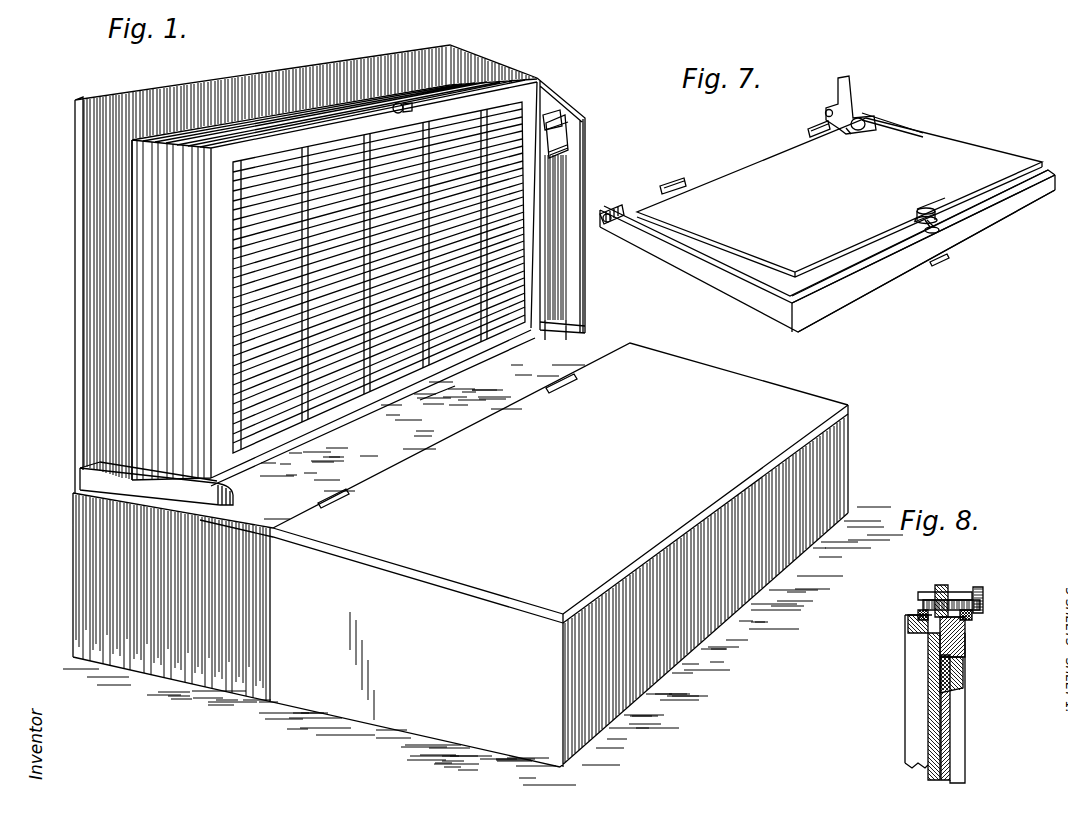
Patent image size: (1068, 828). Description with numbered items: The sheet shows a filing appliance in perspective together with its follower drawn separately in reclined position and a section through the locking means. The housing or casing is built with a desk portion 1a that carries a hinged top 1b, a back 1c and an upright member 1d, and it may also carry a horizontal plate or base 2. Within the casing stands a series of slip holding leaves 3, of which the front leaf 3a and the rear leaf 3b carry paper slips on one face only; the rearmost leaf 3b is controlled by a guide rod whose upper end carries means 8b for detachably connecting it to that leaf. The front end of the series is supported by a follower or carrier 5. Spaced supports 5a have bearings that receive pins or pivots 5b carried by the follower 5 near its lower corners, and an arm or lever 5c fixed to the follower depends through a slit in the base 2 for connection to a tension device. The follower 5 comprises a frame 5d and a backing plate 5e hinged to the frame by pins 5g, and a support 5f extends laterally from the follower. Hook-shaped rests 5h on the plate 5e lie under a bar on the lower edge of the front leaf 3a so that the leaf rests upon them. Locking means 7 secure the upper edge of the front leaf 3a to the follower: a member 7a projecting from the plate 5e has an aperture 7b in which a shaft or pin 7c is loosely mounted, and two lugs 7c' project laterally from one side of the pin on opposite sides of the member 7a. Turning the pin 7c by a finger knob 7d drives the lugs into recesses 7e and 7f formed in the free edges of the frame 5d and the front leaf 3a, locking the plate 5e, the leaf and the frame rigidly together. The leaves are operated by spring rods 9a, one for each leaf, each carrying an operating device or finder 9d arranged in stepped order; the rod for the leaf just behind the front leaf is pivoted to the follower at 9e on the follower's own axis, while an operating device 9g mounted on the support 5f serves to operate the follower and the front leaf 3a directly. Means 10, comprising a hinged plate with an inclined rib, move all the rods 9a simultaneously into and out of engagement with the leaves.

In FIG. 1, the desk portion 1a is at (465, 595).
In FIG. 1, the hinged top 1b is at (485, 595).
In FIG. 1, the back 1c is at (77, 313).
In FIG. 1, the upright member 1d is at (583, 140).
In FIG. 1, the horizontal plate or base 2 is at (468, 420).
In FIG. 1, the series of slip holding leaves 3 is at (160, 391).
In FIG. 8, the front leaf 3a is at (907, 700).
In FIG. 1, the rear leaf 3b is at (133, 348).
In FIG. 1, the follower or carrier 5 is at (287, 420).
In FIG. 7, the follower or carrier 5 is at (827, 225).
In FIG. 8, the follower or carrier 5 is at (955, 706).
In FIG. 1, the spaced supports 5a is at (100, 473).
In FIG. 7, the pins or pivots 5b is at (606, 224).
In FIG. 7, the arm or lever 5c is at (604, 210).
In FIG. 1, the frame 5d is at (430, 378).
In FIG. 7, the frame 5d is at (877, 284).
In FIG. 8, the frame 5d is at (965, 675).
In FIG. 7, the backing plate 5e is at (828, 250).
In FIG. 8, the backing plate 5e is at (950, 722).
In FIG. 1, the support 5f is at (568, 162).
In FIG. 8, the support 5f is at (952, 735).
In FIG. 7, the pins 5g is at (847, 128).
In FIG. 7, the rests or supporting devices 5h is at (812, 133).
In FIG. 1, the locking means 7 is at (394, 111).
In FIG. 7, the locking means 7 is at (940, 226).
In FIG. 8, the locking means 7 is at (945, 582).
In FIG. 1, the projecting member 7a is at (412, 108).
In FIG. 7, the projecting member 7a is at (934, 207).
In FIG. 8, the projecting member 7a is at (946, 587).
In FIG. 8, the aperture 7b is at (937, 586).
In FIG. 8, the shaft or pin 7c is at (968, 637).
In FIG. 7, the locking lugs 7c' is at (915, 207).
In FIG. 8, the locking lugs 7c' is at (937, 584).
In FIG. 7, the finger knob 7d is at (927, 233).
In FIG. 7, the depression or recess 7e is at (937, 258).
In FIG. 8, the depression or recess 7e is at (967, 617).
In FIG. 8, the depression or recess 7f is at (908, 627).
In FIG. 1, the detachable connecting means 8b is at (330, 107).
In FIG. 7, the rods or members 9a is at (845, 82).
In FIG. 1, the operating devices or finders 9d is at (556, 118).
In FIG. 7, the pivot of rod on follower 9e is at (855, 113).
In FIG. 1, the operating device for front leaf 9g is at (566, 128).
In FIG. 1, the rod-moving means 10 is at (557, 136).